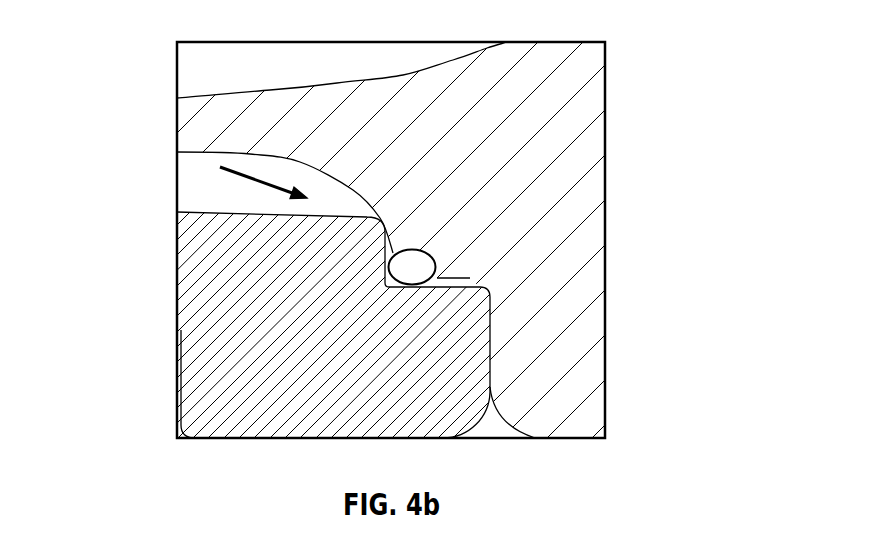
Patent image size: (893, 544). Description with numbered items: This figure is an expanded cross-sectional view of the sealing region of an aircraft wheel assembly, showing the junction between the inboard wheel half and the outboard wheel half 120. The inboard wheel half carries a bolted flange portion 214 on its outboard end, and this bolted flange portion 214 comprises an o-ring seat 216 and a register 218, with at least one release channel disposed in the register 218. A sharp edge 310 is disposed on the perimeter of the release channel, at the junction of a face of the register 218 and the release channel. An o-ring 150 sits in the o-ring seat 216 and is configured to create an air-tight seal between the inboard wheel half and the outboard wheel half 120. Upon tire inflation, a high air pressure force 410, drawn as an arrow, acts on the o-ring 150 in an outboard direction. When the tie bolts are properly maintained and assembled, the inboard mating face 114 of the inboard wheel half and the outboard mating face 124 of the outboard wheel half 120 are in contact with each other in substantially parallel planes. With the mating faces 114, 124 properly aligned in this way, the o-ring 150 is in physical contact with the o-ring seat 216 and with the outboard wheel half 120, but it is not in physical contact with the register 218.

The outboard wheel half 120 is at (243, 124).
The high air pressure force 410 is at (250, 178).
The bolted flange portion 214 is at (218, 237).
The o-ring seat 216 is at (385, 284).
The inboard mating face 114 is at (487, 376).
The o-ring 150 is at (412, 258).
The sharp edge 310 is at (441, 275).
The register 218 is at (446, 284).
The outboard mating face 124 is at (490, 380).